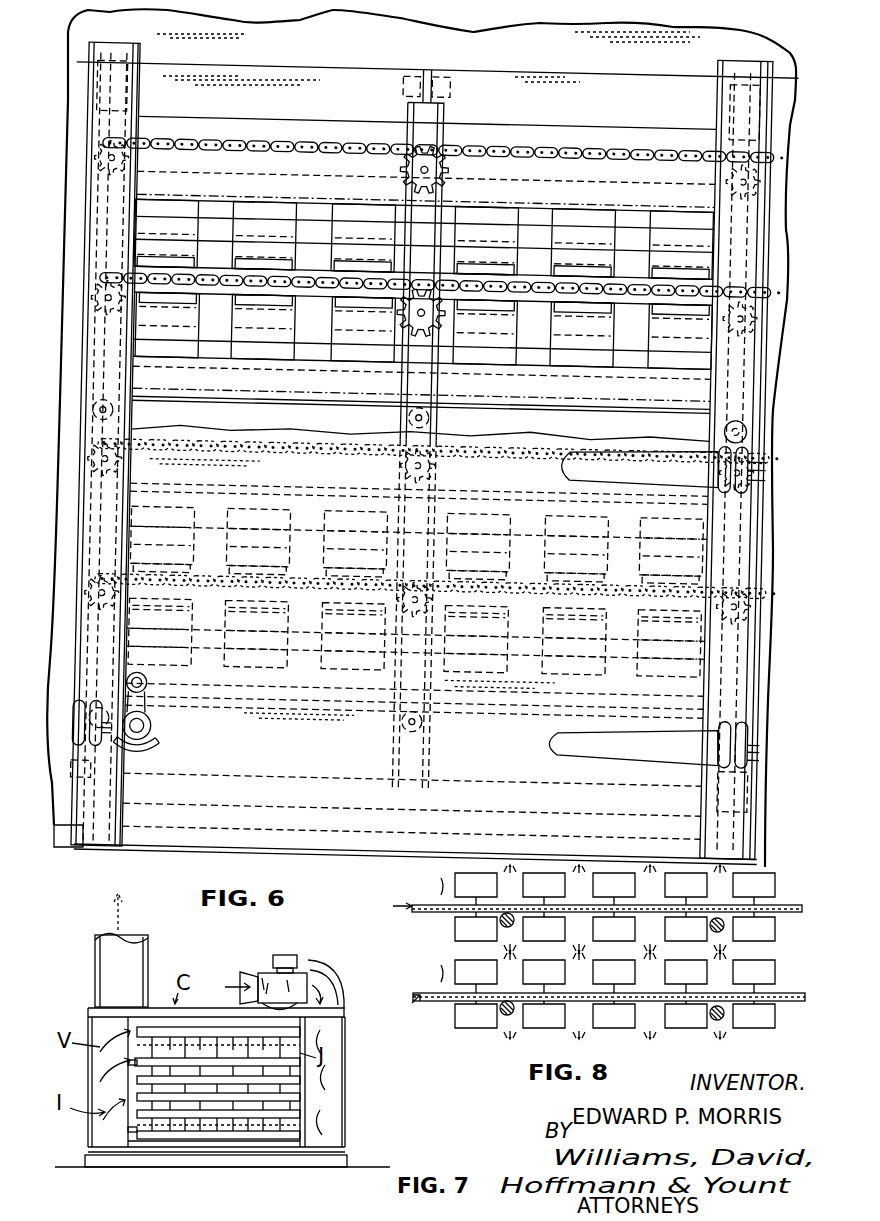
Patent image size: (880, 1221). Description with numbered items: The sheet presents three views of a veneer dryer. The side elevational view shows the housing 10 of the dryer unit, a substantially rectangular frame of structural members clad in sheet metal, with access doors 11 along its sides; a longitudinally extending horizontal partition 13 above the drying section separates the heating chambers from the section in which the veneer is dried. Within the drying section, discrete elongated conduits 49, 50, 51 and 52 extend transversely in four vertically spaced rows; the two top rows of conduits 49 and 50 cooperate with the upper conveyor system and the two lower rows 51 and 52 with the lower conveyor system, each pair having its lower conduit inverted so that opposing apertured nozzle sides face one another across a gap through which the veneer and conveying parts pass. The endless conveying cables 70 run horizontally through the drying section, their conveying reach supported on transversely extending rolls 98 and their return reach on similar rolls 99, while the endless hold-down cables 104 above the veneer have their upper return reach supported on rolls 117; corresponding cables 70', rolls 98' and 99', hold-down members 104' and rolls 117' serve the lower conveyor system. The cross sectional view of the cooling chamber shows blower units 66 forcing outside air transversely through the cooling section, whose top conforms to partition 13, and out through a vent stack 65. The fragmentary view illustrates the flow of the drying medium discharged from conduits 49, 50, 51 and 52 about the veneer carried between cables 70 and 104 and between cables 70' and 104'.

In FIG. 6, the housing 10 is at (68, 334).
In FIG. 6, the access doors 11 is at (706, 750).
In FIG. 7, the horizontal partition 13 is at (340, 1019).
In FIG. 6, the conduit means 49 is at (709, 226).
In FIG. 7, the conduit means 49 is at (302, 1047).
In FIG. 8, the conduit means 49 is at (776, 880).
In FIG. 6, the conduit means 50 is at (710, 358).
In FIG. 8, the conduit means 50 is at (776, 937).
In FIG. 6, the conduit means 51 is at (712, 533).
In FIG. 8, the conduit means 51 is at (776, 977).
In FIG. 6, the conduit means 52 is at (770, 672).
In FIG. 7, the conduit means 52 is at (273, 1135).
In FIG. 8, the conduit means 52 is at (776, 1026).
In FIG. 7, the vent stack 65 is at (148, 975).
In FIG. 7, the blower unit 66 is at (265, 964).
In FIG. 6, the endless conveying member 70 is at (420, 420).
In FIG. 7, the endless conveying member 70 is at (93, 1073).
In FIG. 8, the endless conveying member 70 is at (590, 916).
In FIG. 6, the lower heating pipe 70' is at (413, 722).
In FIG. 7, the lower heating pipe 70' is at (92, 1133).
In FIG. 8, the lower heating pipe 70' is at (601, 1014).
In FIG. 7, the rolls 98 is at (258, 1055).
In FIG. 8, the rolls 98 is at (657, 944).
In FIG. 7, the lower steam pipe 98' is at (262, 1118).
In FIG. 8, the lower steam pipe 98' is at (625, 1034).
In FIG. 7, the support rolls 99 is at (259, 1079).
In FIG. 6, the lower guide roller 99' is at (435, 729).
In FIG. 7, the lower guide roller 99' is at (262, 1144).
In FIG. 7, the endless hold-down cables 104 is at (218, 1017).
In FIG. 8, the endless hold-down cables 104 is at (579, 890).
In FIG. 7, the lower nozzle row 104' is at (220, 1155).
In FIG. 8, the lower nozzle row 104' is at (579, 976).
In FIG. 7, the rolls 117 is at (240, 1004).
In FIG. 7, the lower baffle plate 117' is at (269, 1098).